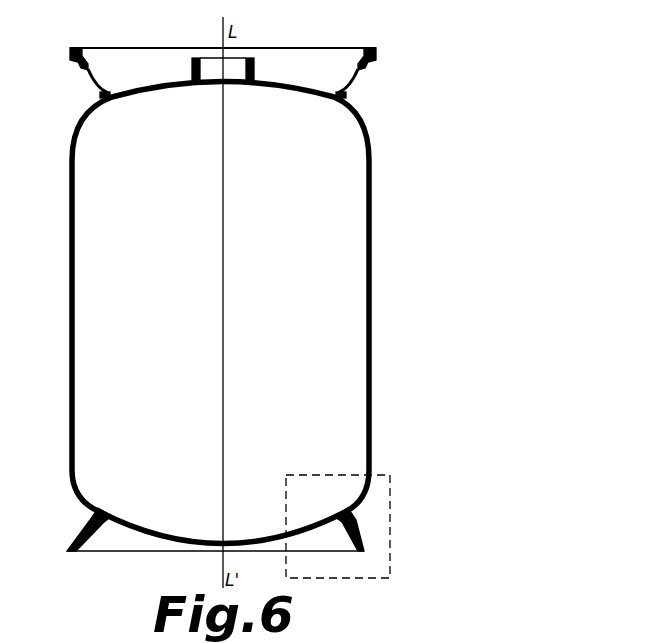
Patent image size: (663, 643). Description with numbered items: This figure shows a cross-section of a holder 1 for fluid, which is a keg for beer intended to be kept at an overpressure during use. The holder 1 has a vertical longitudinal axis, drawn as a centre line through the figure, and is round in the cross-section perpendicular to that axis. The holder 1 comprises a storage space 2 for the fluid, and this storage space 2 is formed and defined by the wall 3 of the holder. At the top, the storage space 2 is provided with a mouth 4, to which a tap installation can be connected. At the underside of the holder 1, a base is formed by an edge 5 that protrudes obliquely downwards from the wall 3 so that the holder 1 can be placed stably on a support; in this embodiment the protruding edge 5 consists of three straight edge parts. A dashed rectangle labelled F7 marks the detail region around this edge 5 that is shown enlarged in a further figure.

The holder 1 is at (453, 101).
The storage space 2 is at (347, 292).
The wall 3 is at (372, 186).
The mouth 4 is at (237, 64).
The edge 5 is at (350, 530).
The detail area of FIG. 7 F7 is at (392, 579).